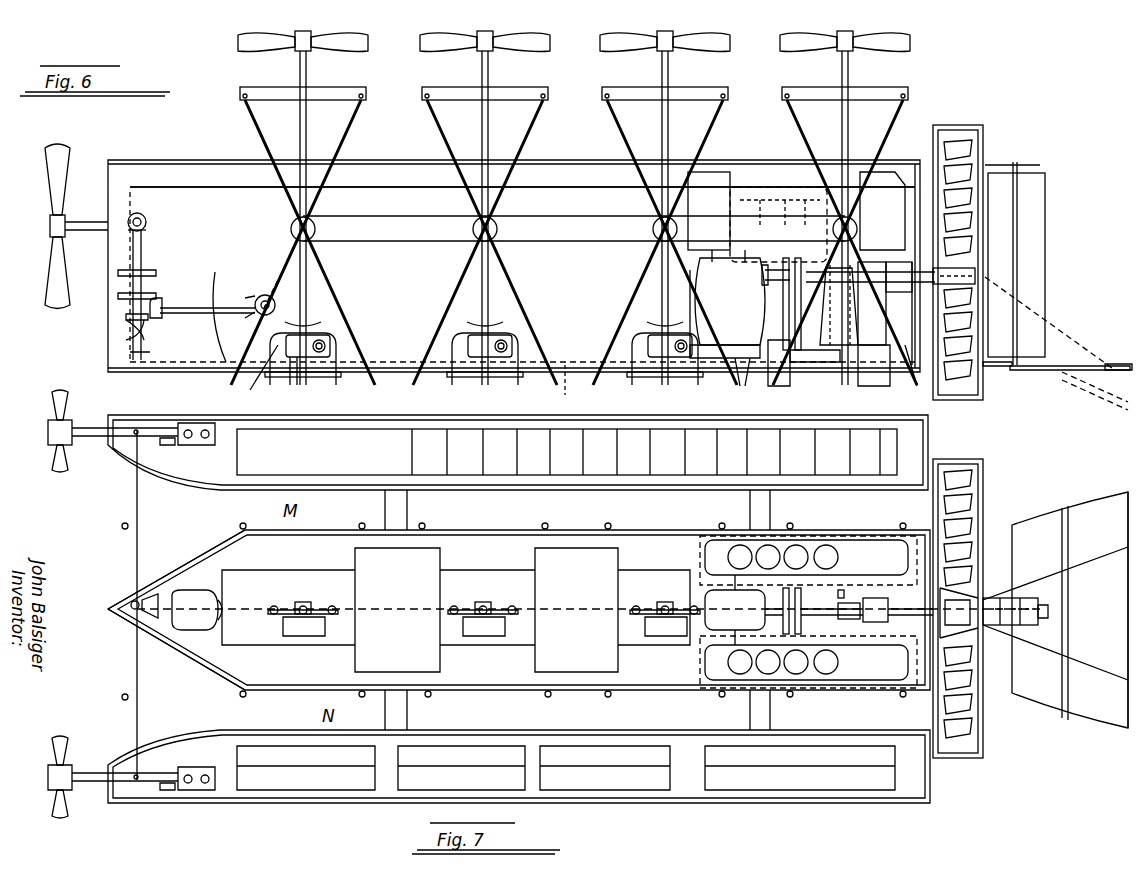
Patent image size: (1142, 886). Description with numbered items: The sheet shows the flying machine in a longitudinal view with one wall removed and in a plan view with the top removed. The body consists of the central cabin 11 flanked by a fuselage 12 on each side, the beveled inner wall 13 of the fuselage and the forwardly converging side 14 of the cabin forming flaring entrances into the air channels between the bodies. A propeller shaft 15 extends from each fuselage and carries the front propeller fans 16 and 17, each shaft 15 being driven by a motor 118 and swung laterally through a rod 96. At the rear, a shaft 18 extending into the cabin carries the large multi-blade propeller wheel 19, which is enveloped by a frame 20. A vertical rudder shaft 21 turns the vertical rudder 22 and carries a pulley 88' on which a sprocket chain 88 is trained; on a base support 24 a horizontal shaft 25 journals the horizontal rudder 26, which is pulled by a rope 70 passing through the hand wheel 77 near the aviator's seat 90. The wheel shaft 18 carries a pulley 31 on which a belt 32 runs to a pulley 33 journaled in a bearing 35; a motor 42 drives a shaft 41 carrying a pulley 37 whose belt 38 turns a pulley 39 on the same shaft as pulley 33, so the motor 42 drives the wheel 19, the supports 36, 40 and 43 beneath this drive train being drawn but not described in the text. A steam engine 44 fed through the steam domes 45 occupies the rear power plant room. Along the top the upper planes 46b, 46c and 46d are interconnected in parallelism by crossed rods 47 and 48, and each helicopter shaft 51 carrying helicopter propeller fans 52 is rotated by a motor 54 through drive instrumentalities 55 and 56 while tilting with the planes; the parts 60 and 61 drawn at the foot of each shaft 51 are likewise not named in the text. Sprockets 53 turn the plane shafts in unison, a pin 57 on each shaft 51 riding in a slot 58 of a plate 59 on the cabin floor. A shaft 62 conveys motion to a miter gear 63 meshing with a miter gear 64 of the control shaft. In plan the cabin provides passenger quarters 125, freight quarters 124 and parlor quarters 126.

In FIG. 6, the central cabin 11 is at (514, 266).
In FIG. 7, the central cabin 11 is at (484, 540).
In FIG. 7, the fuselage 12 is at (455, 738).
In FIG. 7, the inner wall of fuselage 13 is at (168, 482).
In FIG. 7, the forwardly converging side 14 is at (163, 570).
In FIG. 6, the propeller shaft 15 is at (48, 228).
In FIG. 7, the propeller shaft 15 is at (90, 445).
In FIG. 6, the propeller fan 16 is at (52, 150).
In FIG. 7, the propeller fan 16 is at (60, 431).
In FIG. 7, the propeller fan 17 is at (70, 742).
In FIG. 6, the shaft 18 is at (935, 262).
In FIG. 6, the multi-blade propeller wheel 19 is at (960, 160).
In FIG. 7, the multi-blade propeller wheel 19 is at (965, 520).
In FIG. 6, the frame 20 is at (952, 125).
In FIG. 7, the frame 20 is at (968, 462).
In FIG. 6, the vertical rudder shaft 21 is at (1018, 213).
In FIG. 6, the vertical rudder 22 is at (1030, 248).
In FIG. 7, the vertical rudder 22 is at (1048, 611).
In FIG. 6, the base support 24 is at (1035, 372).
In FIG. 7, the base support 24 is at (1036, 525).
In FIG. 6, the horizontal shaft 25 is at (1063, 380).
In FIG. 7, the horizontal shaft 25 is at (1066, 506).
In FIG. 6, the horizontal rudder 26 is at (1112, 364).
In FIG. 7, the horizontal rudder 26 is at (1110, 492).
In FIG. 6, the pulley 31 is at (892, 262).
In FIG. 7, the pulley 31 is at (888, 602).
In FIG. 6, the belt 32 is at (880, 318).
In FIG. 6, the pulley 33 is at (900, 332).
In FIG. 6, the bearing 35 is at (838, 313).
In FIG. 6, the support 36 is at (872, 373).
In FIG. 6, the pulley 37 is at (802, 298).
In FIG. 7, the pulley 37 is at (800, 596).
In FIG. 6, the belt 38 is at (770, 280).
In FIG. 6, the pulley 39 is at (815, 375).
In FIG. 6, the bracket 40 is at (782, 370).
In FIG. 6, the shaft 41 is at (760, 287).
In FIG. 6, the motor 42 is at (700, 272).
In FIG. 7, the motor 42 is at (708, 596).
In FIG. 6, the engine support 43 is at (727, 377).
In FIG. 6, the steam engine 44 is at (757, 216).
In FIG. 7, the steam engine 44 is at (866, 540).
In FIG. 6, the steam dome 45 is at (882, 211).
In FIG. 6, the upper plane 46b is at (626, 90).
In FIG. 6, the upper plane 46c is at (522, 84).
In FIG. 6, the upper plane 46d is at (272, 82).
In FIG. 6, the crossed rod 47 is at (256, 136).
In FIG. 6, the crossed rod 48 is at (356, 138).
In FIG. 6, the helicopter shaft 51 is at (306, 137).
In FIG. 6, the helicopter propeller fan 52 is at (360, 43).
In FIG. 6, the sprocket 53 is at (315, 230).
In FIG. 6, the motor 54 is at (391, 217).
In FIG. 7, the motor 54 is at (300, 636).
In FIG. 6, the drive instrumentality 55 is at (282, 244).
In FIG. 6, the drive instrumentality 56 is at (292, 300).
In FIG. 6, the pin 57 is at (258, 292).
In FIG. 6, the slot 58 is at (252, 300).
In FIG. 6, the plate 59 is at (272, 380).
In FIG. 7, the plate 59 is at (315, 608).
In FIG. 6, the collar 60 is at (318, 166).
In FIG. 6, the bracket 61 is at (465, 380).
In FIG. 6, the shaft 62 is at (182, 318).
In FIG. 6, the miter gear 63 is at (162, 304).
In FIG. 6, the miter gear 64 is at (126, 318).
In FIG. 6, the rope 70 is at (575, 186).
In FIG. 7, the rope 70 is at (1045, 652).
In FIG. 6, the hand wheel 77 is at (150, 298).
In FIG. 6, the sprocket chain 88 is at (571, 388).
In FIG. 6, the pulley 88' is at (1002, 389).
In FIG. 6, the seat 90 is at (178, 277).
In FIG. 7, the seat 90 is at (206, 630).
In FIG. 7, the rod 96 is at (135, 498).
In FIG. 7, the motor 118 is at (178, 445).
In FIG. 7, the freight quarters 124 is at (308, 790).
In FIG. 7, the passenger quarters 125 is at (595, 470).
In FIG. 7, the parlor quarters 126 is at (432, 652).